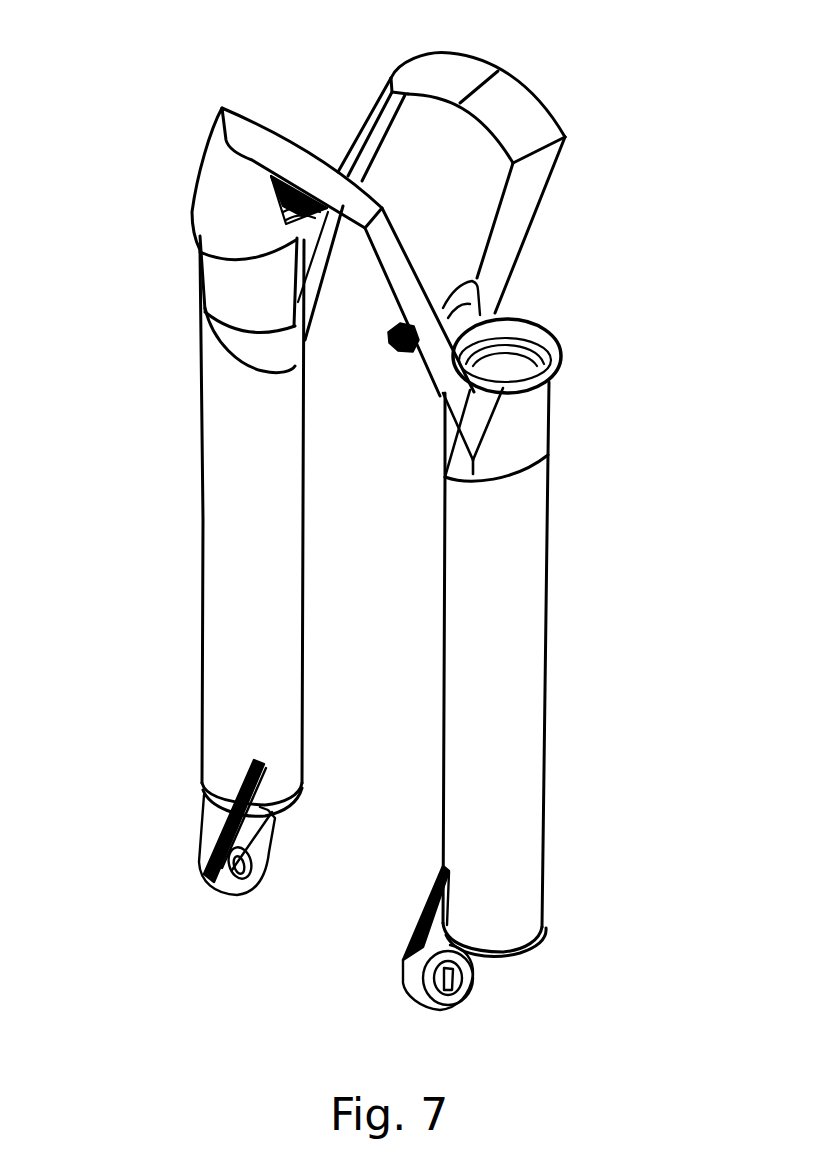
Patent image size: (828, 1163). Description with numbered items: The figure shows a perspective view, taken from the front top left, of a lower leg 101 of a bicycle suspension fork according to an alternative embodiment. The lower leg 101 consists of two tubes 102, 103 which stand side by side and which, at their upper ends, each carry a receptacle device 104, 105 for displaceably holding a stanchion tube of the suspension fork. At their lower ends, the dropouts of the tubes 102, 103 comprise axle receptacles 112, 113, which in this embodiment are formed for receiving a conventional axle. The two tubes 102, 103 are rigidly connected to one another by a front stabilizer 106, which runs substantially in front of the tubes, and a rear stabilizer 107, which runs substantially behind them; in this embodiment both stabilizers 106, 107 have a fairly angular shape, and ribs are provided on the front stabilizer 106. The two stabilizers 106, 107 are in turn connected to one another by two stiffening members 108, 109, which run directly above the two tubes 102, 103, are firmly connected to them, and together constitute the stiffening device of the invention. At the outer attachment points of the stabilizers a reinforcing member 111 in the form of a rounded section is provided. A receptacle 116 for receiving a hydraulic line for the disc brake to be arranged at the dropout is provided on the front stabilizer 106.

The lower leg 101 is at (142, 468).
The tube 102 is at (242, 602).
The tube 103 is at (500, 594).
The receptacle device for stanchion tube 104 is at (285, 210).
The receptacle device for stanchion tube 105 is at (513, 372).
The front stabilizer 106 is at (262, 138).
The rear stabilizer 107 is at (520, 110).
The stiffening member 108 is at (295, 235).
The stiffening member 109 is at (457, 310).
The reinforcing member 111 is at (460, 420).
The axle receptacle 112 is at (202, 863).
The axle receptacle 113 is at (470, 985).
The receptacle for adjusting device 116 is at (398, 350).